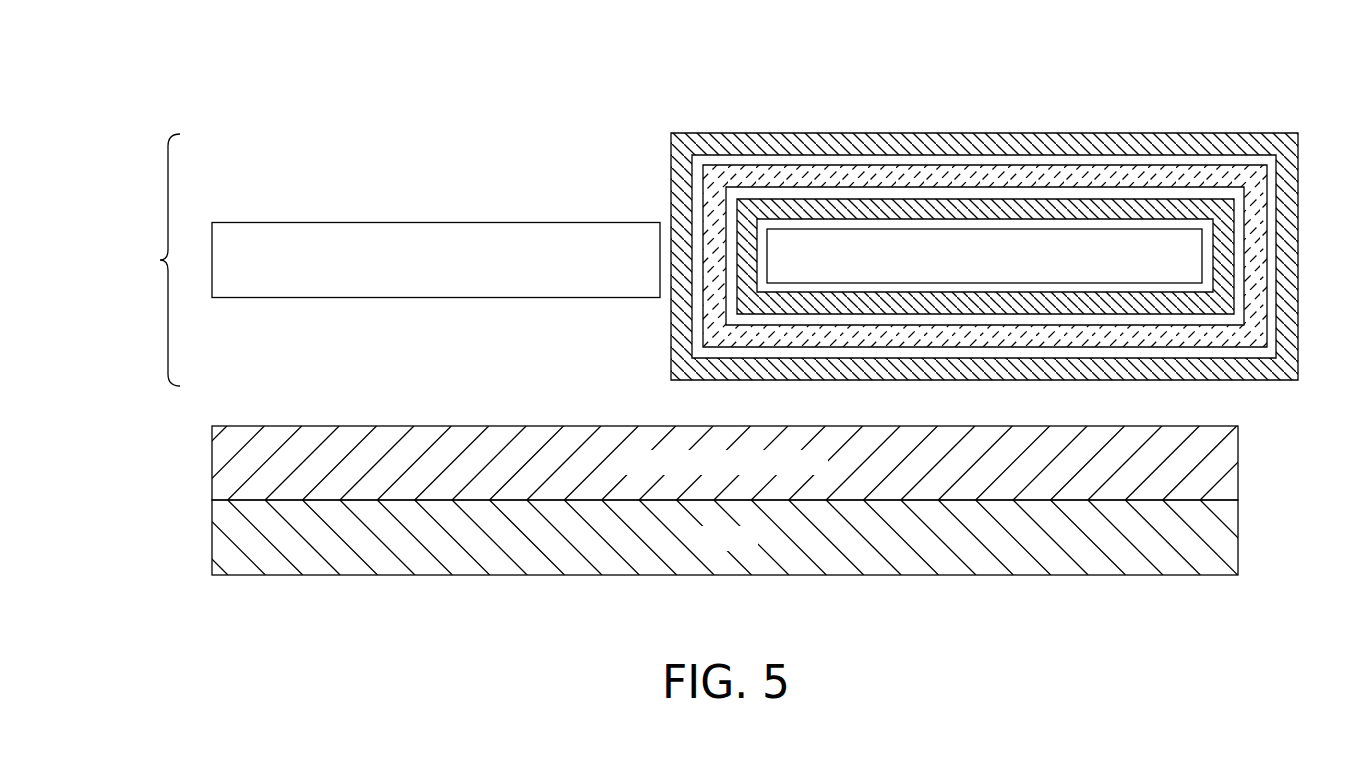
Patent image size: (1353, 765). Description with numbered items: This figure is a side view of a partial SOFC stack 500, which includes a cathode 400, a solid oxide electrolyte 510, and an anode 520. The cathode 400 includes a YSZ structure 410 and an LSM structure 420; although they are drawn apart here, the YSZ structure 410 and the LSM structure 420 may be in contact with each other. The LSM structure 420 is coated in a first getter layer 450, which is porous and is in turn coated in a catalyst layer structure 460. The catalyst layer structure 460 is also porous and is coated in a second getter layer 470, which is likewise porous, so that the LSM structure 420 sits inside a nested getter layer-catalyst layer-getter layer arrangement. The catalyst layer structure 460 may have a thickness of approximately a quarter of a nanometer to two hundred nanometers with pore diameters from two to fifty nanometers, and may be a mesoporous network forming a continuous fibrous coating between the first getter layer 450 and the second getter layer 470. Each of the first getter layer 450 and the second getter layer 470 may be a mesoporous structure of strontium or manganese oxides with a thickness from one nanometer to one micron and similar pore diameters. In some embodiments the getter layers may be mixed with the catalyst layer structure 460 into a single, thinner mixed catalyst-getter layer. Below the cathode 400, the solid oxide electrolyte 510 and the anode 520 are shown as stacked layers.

The partial SOFC stack 500 is at (191, 82).
The cathode 400 is at (160, 261).
The YSZ structure 410 is at (436, 222).
The LSM structure 420 is at (1073, 247).
The first getter layer 450 is at (970, 207).
The catalyst layer structure 460 is at (874, 177).
The second getter layer 470 is at (771, 133).
The solid oxide electrolyte 510 is at (212, 463).
The anode 520 is at (212, 537).